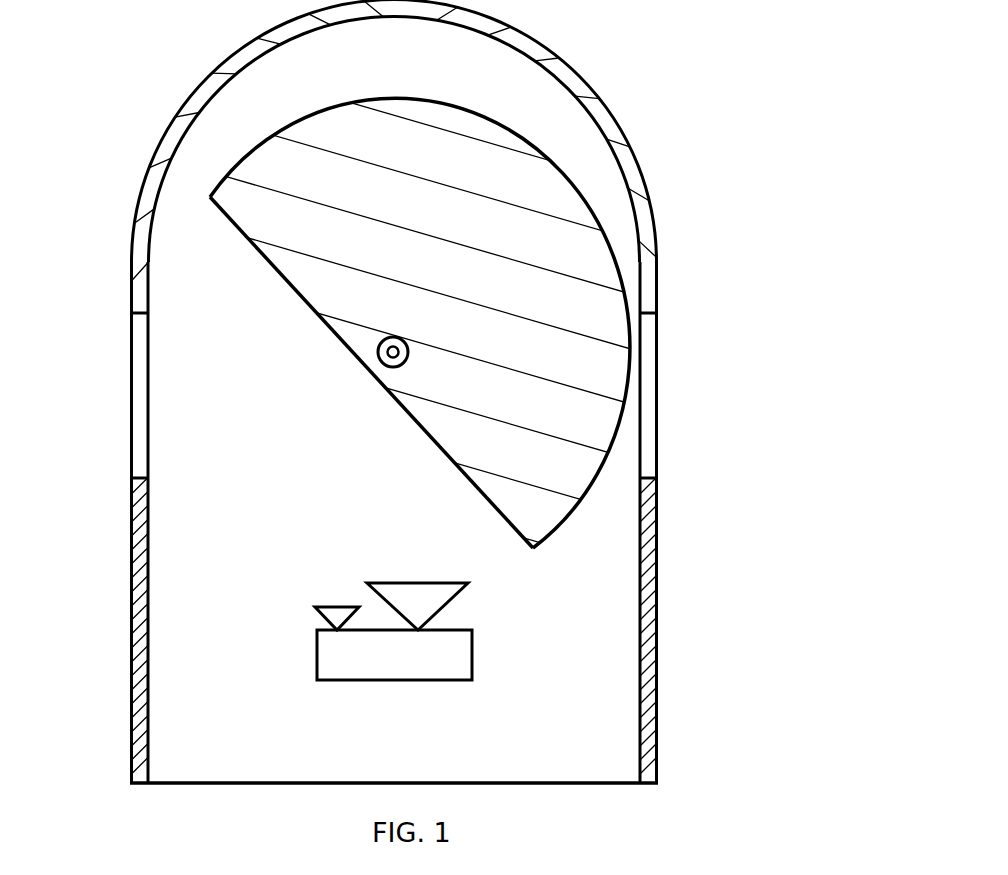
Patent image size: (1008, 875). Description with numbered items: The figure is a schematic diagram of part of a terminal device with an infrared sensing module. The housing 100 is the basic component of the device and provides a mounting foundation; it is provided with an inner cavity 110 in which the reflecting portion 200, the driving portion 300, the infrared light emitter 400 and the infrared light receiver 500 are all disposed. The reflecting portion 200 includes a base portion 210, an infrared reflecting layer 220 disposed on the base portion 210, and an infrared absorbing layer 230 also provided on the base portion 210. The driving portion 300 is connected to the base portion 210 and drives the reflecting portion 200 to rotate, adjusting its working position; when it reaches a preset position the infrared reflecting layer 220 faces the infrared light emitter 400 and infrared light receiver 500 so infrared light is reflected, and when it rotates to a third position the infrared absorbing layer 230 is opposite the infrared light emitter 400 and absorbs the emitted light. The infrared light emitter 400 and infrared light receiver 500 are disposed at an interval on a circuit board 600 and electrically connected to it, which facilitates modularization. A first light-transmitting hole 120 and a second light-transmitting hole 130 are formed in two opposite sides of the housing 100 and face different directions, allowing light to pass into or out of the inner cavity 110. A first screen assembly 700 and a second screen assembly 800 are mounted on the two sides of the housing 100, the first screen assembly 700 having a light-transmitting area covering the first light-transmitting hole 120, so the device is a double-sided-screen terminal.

The housing 100 is at (582, 92).
The inner cavity 110 is at (170, 292).
The first light-transmitting hole 120 is at (138, 383).
The second light-transmitting hole 130 is at (647, 418).
The reflecting portion 200 is at (747, 142).
The base portion 210 is at (547, 298).
The infrared reflecting layer 220 is at (300, 300).
The infrared absorbing layer 230 is at (590, 210).
The driving portion 300 is at (383, 361).
The infrared light emitter 400 is at (333, 613).
The infrared light receiver 500 is at (427, 605).
The circuit board 600 is at (453, 657).
The first screen assembly 700 is at (130, 517).
The second screen assembly 800 is at (653, 548).